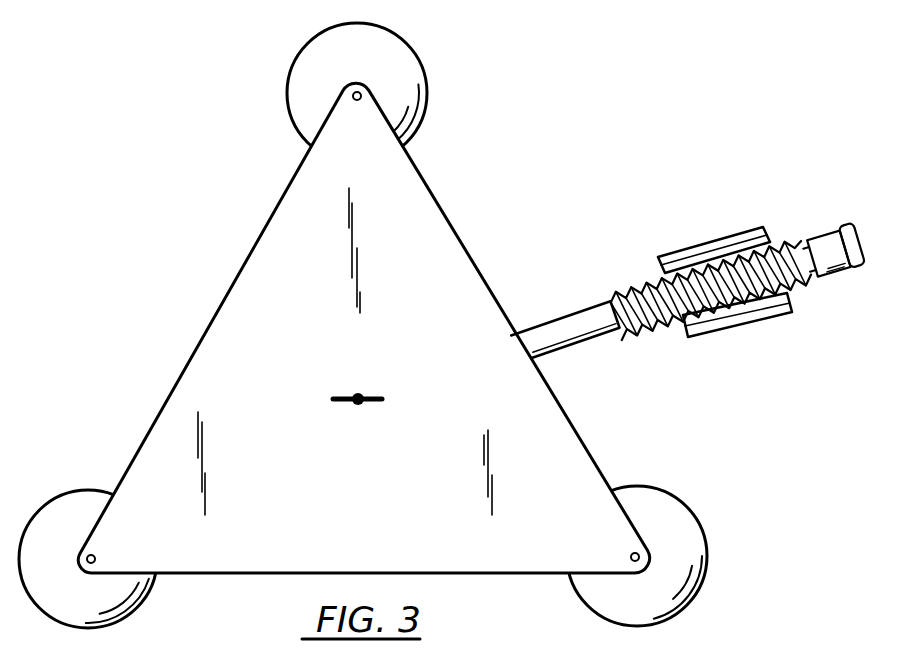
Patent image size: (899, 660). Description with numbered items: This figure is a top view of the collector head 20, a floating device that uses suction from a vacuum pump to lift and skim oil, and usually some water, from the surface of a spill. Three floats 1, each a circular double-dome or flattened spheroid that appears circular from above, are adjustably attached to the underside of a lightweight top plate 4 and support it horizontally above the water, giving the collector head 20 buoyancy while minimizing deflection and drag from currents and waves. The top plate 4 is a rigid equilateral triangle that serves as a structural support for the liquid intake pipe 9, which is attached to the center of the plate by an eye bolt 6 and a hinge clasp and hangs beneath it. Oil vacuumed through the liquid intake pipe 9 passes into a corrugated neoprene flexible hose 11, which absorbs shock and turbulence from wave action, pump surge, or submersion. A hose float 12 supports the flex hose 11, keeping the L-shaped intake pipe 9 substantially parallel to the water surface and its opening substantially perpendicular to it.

The float 1 is at (408, 52).
The top plate 4 is at (190, 380).
The eye bolt 6 is at (383, 398).
The liquid intake pipe 9 is at (541, 327).
The flexible hose 11 is at (650, 327).
The hose float 12 is at (743, 322).
The collector head 20 is at (468, 203).